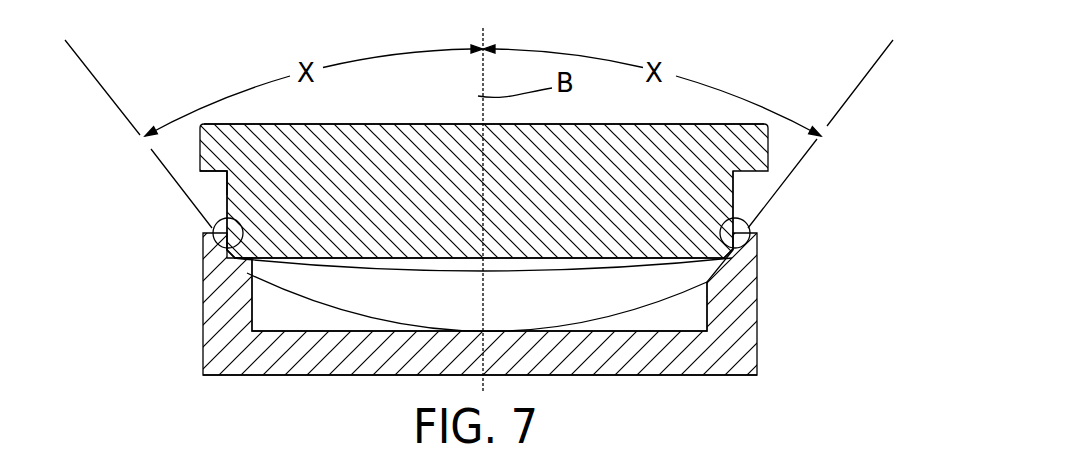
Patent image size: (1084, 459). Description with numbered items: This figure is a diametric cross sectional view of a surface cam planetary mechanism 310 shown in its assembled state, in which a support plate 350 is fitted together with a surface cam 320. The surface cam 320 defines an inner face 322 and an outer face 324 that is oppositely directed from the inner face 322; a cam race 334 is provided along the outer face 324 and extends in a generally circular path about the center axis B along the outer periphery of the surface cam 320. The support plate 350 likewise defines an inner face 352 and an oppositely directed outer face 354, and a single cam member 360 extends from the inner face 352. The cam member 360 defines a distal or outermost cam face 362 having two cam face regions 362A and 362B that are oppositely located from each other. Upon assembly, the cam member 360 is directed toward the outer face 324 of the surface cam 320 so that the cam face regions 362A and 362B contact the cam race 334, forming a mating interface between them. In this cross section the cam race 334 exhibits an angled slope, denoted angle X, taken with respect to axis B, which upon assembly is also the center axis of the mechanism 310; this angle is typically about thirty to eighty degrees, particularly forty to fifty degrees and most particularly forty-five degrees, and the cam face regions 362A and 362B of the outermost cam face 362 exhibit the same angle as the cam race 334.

The surface cam planetary mechanism 310 is at (875, 130).
The surface cam 320 is at (738, 292).
The inner face 322 is at (673, 376).
The outer face 324 is at (708, 312).
The cam race 334 is at (368, 290).
The support plate 350 is at (683, 124).
The inner face 352 is at (213, 183).
The outer face 354 is at (383, 123).
The cam member 360 is at (692, 193).
The outermost cam face 362 is at (300, 264).
The cam face region 362A is at (737, 219).
The cam face region 362B is at (214, 216).